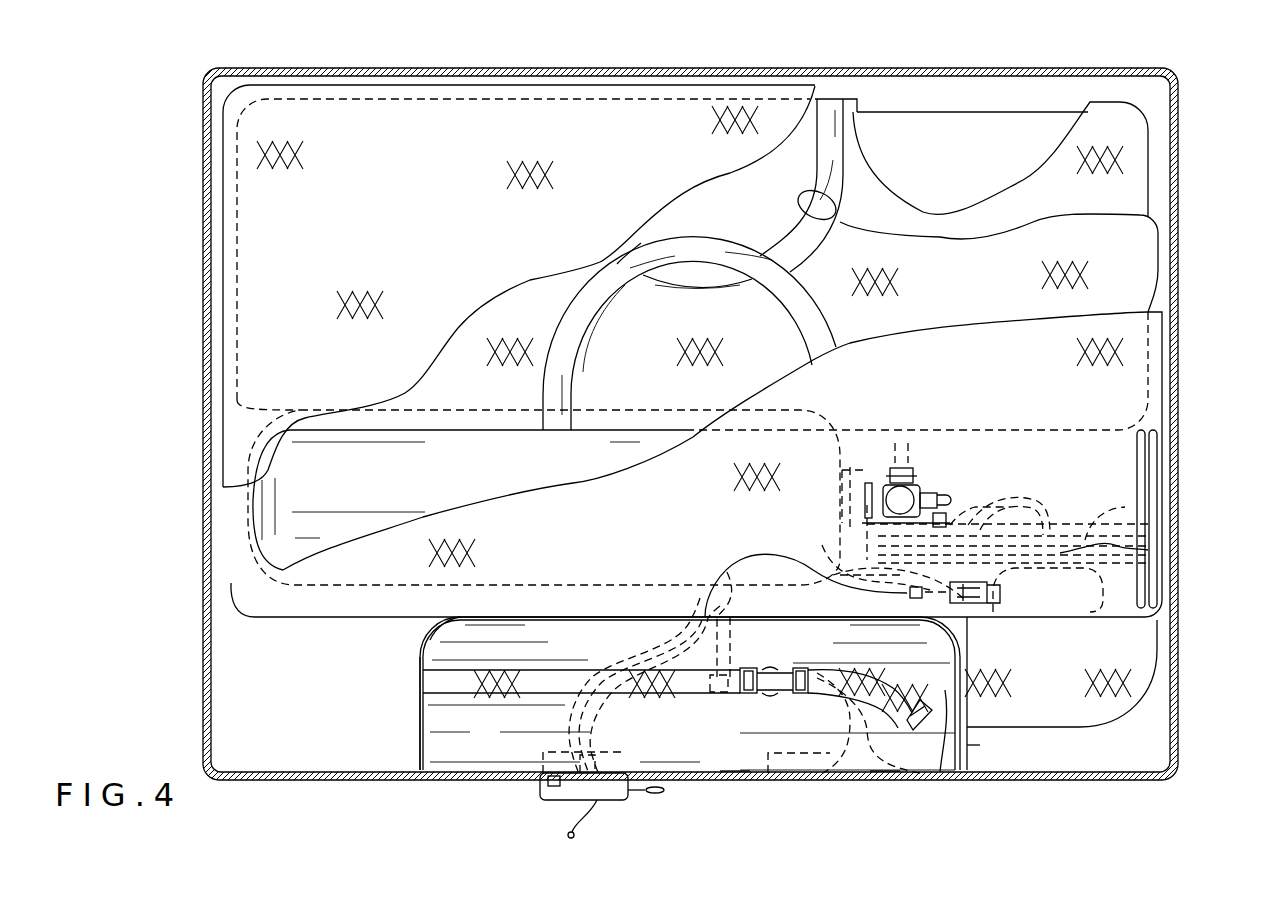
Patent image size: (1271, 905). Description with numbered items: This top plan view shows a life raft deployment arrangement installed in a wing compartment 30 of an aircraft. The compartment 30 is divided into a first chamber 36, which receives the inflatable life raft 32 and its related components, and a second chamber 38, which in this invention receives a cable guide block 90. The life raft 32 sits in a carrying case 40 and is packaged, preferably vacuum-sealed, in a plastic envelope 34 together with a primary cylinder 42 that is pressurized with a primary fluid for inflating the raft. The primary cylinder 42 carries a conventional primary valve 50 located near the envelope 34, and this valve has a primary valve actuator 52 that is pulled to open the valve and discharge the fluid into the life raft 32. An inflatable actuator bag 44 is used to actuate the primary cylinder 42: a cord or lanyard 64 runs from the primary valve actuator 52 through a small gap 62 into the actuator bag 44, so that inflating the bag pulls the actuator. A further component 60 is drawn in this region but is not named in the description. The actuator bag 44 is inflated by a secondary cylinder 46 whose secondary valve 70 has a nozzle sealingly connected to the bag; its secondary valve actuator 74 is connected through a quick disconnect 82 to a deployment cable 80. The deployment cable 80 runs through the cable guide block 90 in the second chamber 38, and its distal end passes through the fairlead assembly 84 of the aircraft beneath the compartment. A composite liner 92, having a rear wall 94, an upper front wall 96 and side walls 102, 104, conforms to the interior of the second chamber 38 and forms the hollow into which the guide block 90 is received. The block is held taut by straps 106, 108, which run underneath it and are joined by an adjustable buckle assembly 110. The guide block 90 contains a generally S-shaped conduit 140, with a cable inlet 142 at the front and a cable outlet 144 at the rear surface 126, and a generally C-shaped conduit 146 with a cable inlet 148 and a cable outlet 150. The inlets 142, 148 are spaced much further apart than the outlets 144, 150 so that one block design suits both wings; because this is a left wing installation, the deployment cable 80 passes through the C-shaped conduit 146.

The compartment 30 is at (1180, 412).
The inflatable life raft 32 is at (912, 113).
The envelope 34 is at (1163, 330).
The first chamber 36 is at (231, 577).
The second chamber 38 is at (447, 756).
The carrying case 40 is at (222, 272).
The primary cylinder 42 is at (248, 518).
The inflatable actuator bag 44 is at (1125, 513).
The secondary cylinder 46 is at (1040, 620).
The primary valve 50 is at (915, 480).
The primary valve actuator 52 is at (948, 510).
The valve 60 is at (1098, 520).
The small gap 62 is at (1052, 525).
The lanyard 64 is at (1008, 507).
The secondary valve 70 is at (990, 612).
The secondary valve actuator 74 is at (965, 627).
The deployment cable 80 is at (727, 572).
The quick disconnect 82 is at (822, 562).
The fairlead assembly 84 is at (618, 800).
The cable guide block 90 is at (488, 750).
The liner 92 is at (880, 773).
The rear wall 94 is at (535, 617).
The upper front wall 96 is at (733, 773).
The side wall 102 is at (415, 720).
The side wall 104 is at (965, 745).
The strap 106 is at (460, 672).
The strap 108 is at (940, 773).
The adjustable buckle assembly 110 is at (778, 700).
The rear surface 126 is at (507, 726).
The S-shaped conduit 140 is at (907, 773).
The cable inlet 142 is at (830, 773).
The cable outlet 144 is at (720, 606).
The C-shaped conduit 146 is at (588, 720).
The cable inlet 148 is at (557, 800).
The cable outlet 150 is at (700, 598).